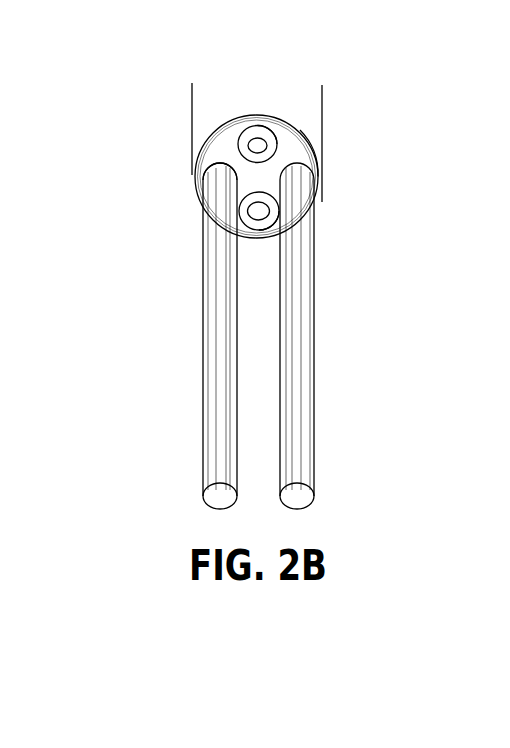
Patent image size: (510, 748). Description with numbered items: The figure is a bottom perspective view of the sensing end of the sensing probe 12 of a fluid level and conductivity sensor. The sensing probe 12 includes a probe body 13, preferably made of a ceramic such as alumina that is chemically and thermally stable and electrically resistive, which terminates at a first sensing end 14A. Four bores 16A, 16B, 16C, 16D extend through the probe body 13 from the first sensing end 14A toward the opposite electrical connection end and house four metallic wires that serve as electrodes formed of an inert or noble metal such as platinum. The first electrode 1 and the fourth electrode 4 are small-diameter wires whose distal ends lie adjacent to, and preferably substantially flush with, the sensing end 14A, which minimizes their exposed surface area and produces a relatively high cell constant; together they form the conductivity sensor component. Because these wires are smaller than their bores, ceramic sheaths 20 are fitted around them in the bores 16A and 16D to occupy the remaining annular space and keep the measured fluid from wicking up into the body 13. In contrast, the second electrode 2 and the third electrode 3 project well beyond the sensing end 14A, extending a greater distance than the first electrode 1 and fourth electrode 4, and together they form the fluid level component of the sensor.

The sensing probe 12 is at (68, 85).
The probe body 13 is at (192, 95).
The first sensing end 14A is at (197, 152).
The first electrode 1 is at (263, 131).
The first bore 16A is at (274, 135).
The second bore 16B is at (220, 163).
The third bore 16C is at (315, 174).
The fourth bore 16D is at (280, 210).
The ceramic sheath 20 is at (248, 140).
The fourth electrode 4 is at (270, 211).
The second electrode 2 is at (220, 350).
The third electrode 3 is at (297, 350).